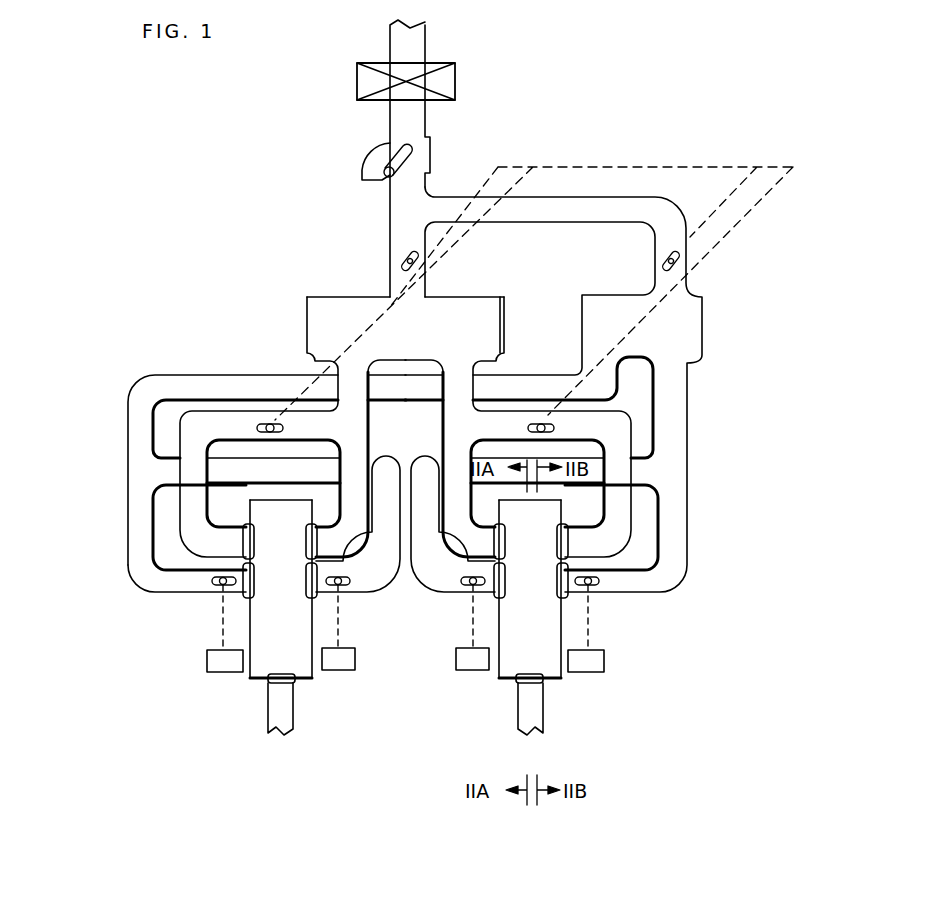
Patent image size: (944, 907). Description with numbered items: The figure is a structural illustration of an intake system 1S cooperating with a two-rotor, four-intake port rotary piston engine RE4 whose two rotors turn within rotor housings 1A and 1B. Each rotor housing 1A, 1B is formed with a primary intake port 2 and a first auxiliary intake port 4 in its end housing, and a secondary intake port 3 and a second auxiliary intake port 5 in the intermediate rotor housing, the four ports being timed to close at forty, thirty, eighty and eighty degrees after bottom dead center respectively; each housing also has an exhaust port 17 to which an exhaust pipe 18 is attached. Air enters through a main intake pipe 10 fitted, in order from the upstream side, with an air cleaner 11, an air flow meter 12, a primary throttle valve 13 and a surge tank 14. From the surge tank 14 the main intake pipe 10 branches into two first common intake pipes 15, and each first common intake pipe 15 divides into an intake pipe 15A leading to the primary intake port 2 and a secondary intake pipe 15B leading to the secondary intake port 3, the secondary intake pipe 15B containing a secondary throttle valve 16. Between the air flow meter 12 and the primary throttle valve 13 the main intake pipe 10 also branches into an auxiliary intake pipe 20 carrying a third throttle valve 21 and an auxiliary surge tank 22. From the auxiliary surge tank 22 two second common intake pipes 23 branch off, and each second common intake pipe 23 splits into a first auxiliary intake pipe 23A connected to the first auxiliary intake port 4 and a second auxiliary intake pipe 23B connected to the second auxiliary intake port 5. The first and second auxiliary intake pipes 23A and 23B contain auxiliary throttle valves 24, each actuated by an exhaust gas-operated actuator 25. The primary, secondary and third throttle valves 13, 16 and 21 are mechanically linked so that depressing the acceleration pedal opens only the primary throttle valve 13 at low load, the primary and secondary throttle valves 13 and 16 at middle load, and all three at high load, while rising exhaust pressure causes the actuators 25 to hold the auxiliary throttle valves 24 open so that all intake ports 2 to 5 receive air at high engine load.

The rotor housing 1A is at (240, 692).
The rotor housing 1B is at (500, 690).
The intake system 1S is at (305, 275).
The primary intake port 2 is at (308, 530).
The secondary intake port 3 is at (257, 540).
The first auxiliary intake port 4 is at (306, 581).
The second auxiliary intake port 5 is at (255, 586).
The main intake pipe 10 is at (440, 116).
The air cleaner 11 is at (357, 72).
The air flow meter 12 is at (380, 150).
The primary throttle valve 13 is at (403, 262).
The surge tank 14 is at (307, 310).
The first common intake pipe 15 is at (382, 384).
The intake pipe 15A is at (453, 430).
The secondary intake pipe 15B is at (180, 490).
The secondary throttle valve 16 is at (270, 424).
The exhaust port 17 is at (281, 673).
The exhaust pipe 18 is at (279, 733).
The auxiliary intake pipe 20 is at (600, 197).
The third throttle valve 21 is at (663, 260).
The auxiliary surge tank 22 is at (570, 315).
The second common intake pipe 23 is at (120, 392).
The first auxiliary intake pipe 23A is at (375, 592).
The second auxiliary intake pipe 23B is at (142, 583).
The auxiliary throttle valve 24 is at (222, 586).
The exhaust gas-operated actuator 25 is at (207, 660).
The rotary engine RE4 is at (395, 680).